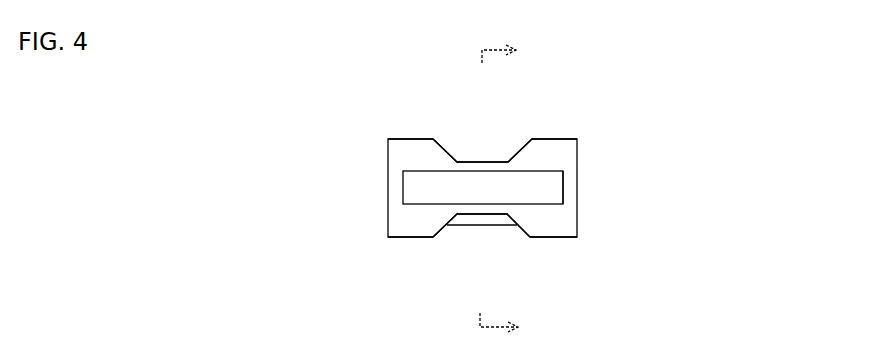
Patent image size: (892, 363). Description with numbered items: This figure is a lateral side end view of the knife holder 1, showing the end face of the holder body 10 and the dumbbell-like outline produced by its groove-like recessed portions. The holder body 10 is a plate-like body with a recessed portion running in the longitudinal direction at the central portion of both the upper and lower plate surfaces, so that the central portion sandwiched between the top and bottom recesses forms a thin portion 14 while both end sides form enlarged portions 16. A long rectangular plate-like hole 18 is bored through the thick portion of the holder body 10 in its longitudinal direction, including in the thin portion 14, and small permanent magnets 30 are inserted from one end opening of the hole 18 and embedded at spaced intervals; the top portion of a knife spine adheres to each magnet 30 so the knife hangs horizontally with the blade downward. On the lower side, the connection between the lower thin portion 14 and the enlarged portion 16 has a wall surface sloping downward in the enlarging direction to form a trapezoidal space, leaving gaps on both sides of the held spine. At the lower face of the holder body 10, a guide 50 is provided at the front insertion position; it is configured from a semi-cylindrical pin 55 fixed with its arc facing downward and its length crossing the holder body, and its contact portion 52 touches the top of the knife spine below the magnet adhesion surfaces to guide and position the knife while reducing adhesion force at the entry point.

The knife holder 1 is at (520, 189).
The holder body 10 is at (578, 180).
The thin portion 14 is at (479, 162).
The enlarged portions 16 is at (400, 150).
The hole 18 is at (562, 186).
The magnets 30 is at (507, 183).
The guide 50 is at (570, 265).
The contact portion 52 is at (463, 225).
The pin 55 is at (497, 218).